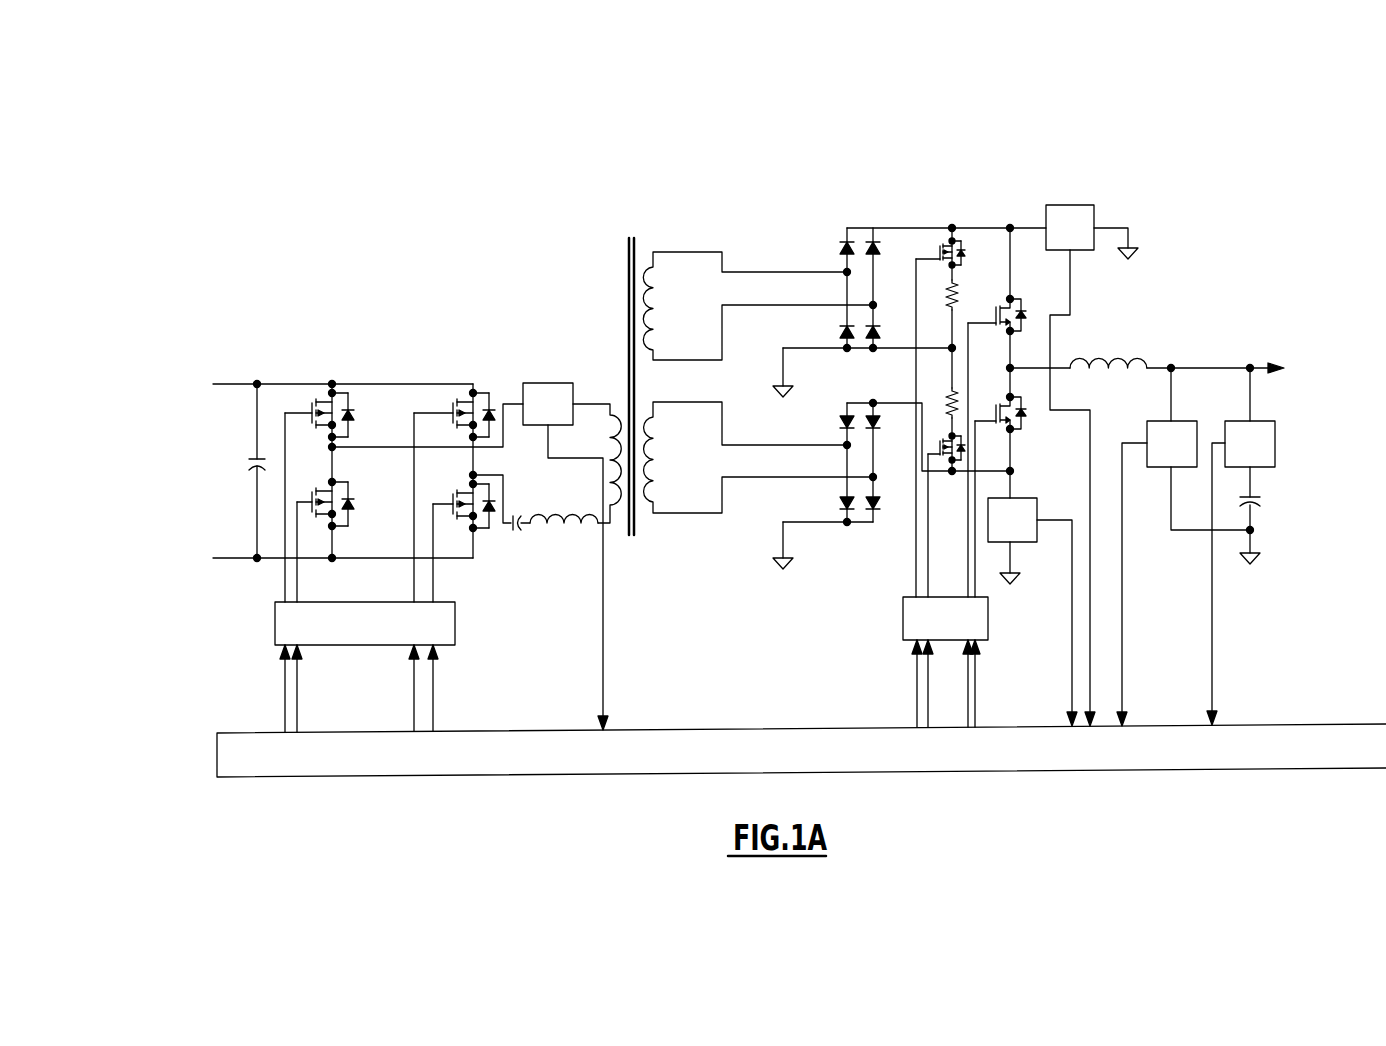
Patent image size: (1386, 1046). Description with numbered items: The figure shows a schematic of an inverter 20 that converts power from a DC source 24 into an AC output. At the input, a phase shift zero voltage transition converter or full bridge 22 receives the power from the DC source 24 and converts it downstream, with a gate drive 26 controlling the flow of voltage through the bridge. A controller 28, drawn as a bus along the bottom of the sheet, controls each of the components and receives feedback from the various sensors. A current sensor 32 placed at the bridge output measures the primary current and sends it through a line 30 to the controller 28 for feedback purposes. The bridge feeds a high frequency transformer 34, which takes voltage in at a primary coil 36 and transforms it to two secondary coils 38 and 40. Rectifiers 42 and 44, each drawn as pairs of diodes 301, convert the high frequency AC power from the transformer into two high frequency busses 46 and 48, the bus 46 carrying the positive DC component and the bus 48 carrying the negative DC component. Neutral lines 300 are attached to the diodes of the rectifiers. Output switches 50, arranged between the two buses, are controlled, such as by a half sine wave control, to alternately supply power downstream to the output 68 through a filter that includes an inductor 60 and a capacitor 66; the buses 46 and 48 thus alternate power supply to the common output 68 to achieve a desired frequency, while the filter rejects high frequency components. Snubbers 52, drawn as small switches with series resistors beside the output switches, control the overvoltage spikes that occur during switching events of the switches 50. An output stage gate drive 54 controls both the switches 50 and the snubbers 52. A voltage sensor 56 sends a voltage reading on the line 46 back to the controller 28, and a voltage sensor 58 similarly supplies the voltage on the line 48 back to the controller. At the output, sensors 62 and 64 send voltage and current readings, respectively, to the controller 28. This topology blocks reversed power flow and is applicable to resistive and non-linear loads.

The inverter 20 is at (392, 157).
The full bridge 22 is at (330, 310).
The DC source 24 is at (232, 388).
The gate drive 26 is at (275, 623).
The controller 28 is at (228, 757).
The line 30 is at (603, 638).
The current sensor 32 is at (543, 383).
The high frequency transformer 34 is at (600, 300).
The primary coil 36 is at (618, 420).
The secondary coil 38 is at (682, 252).
The secondary coil 40 is at (682, 402).
The rectifier 42 is at (810, 338).
The rectifier 44 is at (830, 405).
The positive bus 46 is at (972, 228).
The negative bus 48 is at (1002, 448).
The output switches 50 is at (1002, 299).
The snubbers 52 is at (941, 247).
The output stage gate drive 54 is at (903, 621).
The voltage sensor 56 is at (1096, 222).
The voltage sensor 58 is at (1037, 508).
The inductor 60 is at (1135, 360).
The sensor 62 is at (1147, 433).
The sensor 64 is at (1276, 437).
The capacitor 66 is at (1262, 501).
The output 68 is at (1252, 366).
The neutral lines 300 is at (812, 350).
The rectifier diode pair 301 is at (832, 320).